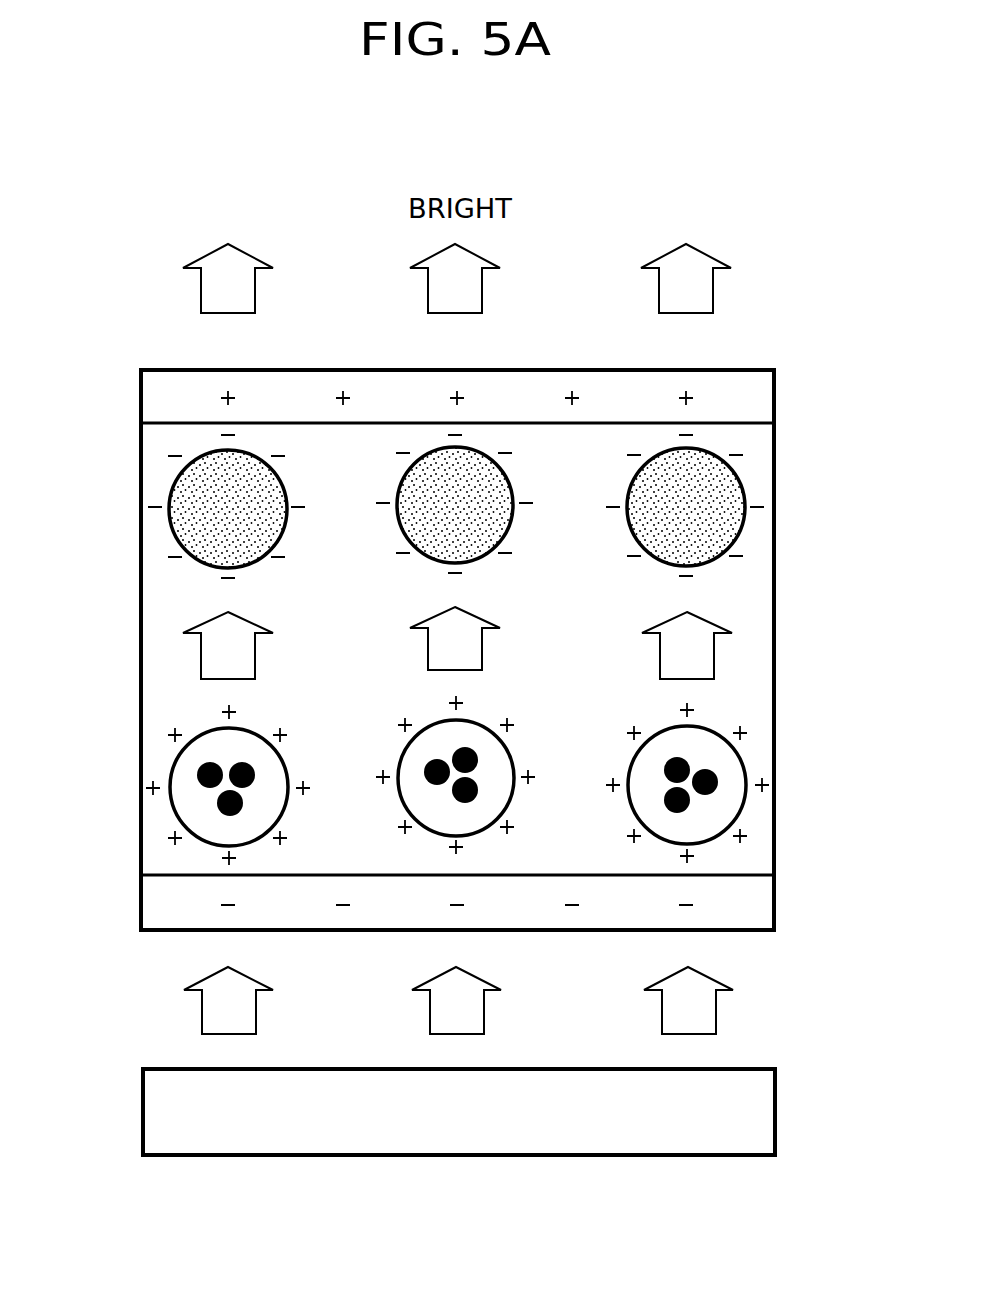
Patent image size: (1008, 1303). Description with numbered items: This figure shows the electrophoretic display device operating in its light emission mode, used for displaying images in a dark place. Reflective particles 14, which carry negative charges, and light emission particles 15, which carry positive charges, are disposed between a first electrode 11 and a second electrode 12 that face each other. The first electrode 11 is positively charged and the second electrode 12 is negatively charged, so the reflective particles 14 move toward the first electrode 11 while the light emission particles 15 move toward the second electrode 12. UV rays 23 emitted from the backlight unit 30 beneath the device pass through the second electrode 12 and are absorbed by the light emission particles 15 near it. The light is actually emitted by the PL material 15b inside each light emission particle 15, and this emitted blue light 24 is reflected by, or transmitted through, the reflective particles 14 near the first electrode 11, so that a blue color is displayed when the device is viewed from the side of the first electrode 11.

The first electrode 11 is at (145, 392).
The second electrode 12 is at (145, 897).
The reflective particle 14 is at (168, 530).
The light emission particle 15 is at (456, 780).
The PL material 15b is at (718, 778).
The UV rays 23 is at (716, 1010).
The blue light 24 is at (200, 290).
The backlight unit 30 is at (775, 1113).